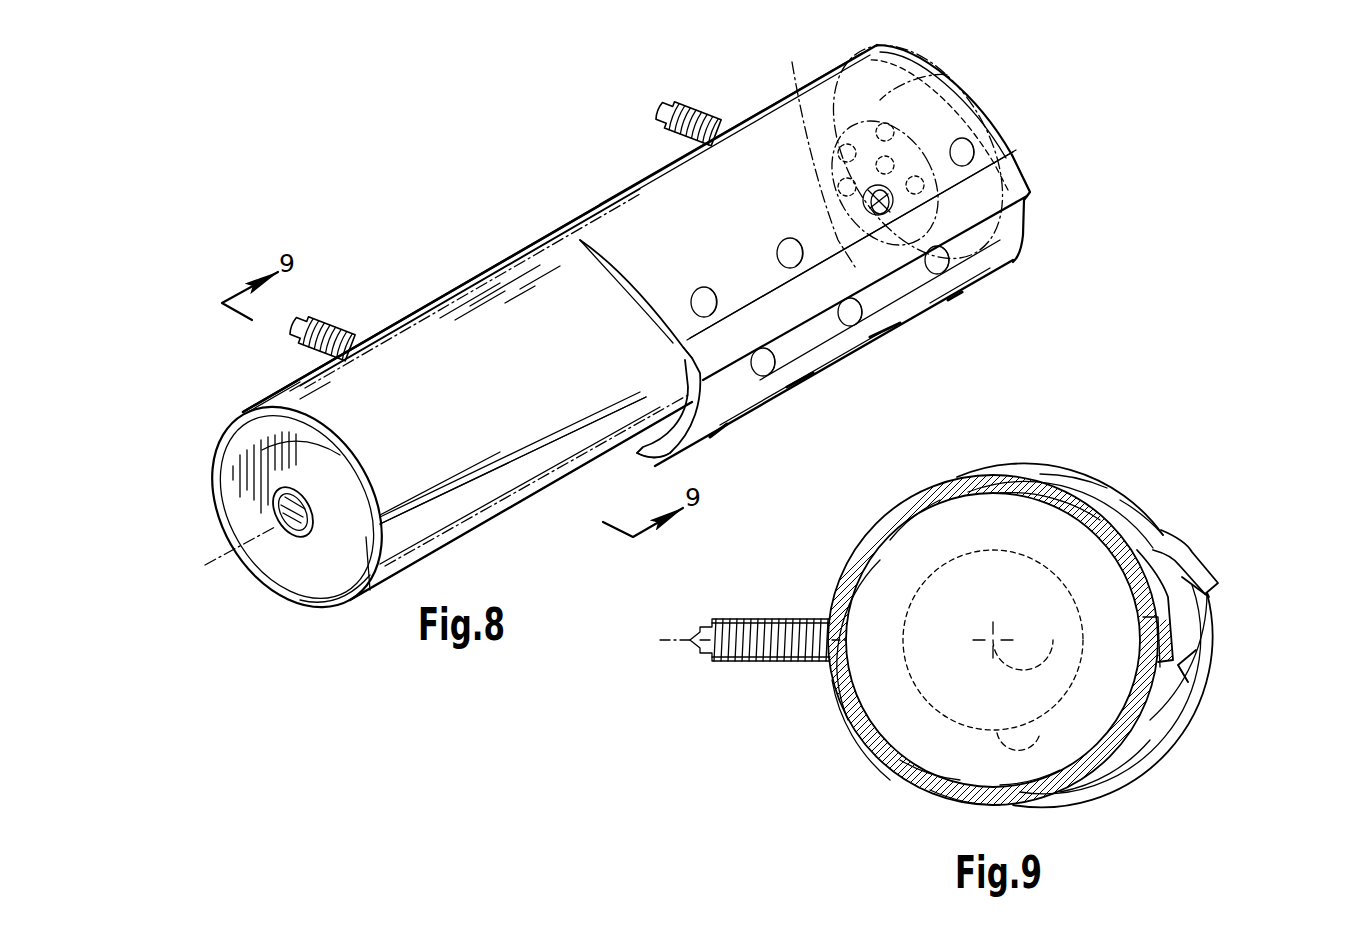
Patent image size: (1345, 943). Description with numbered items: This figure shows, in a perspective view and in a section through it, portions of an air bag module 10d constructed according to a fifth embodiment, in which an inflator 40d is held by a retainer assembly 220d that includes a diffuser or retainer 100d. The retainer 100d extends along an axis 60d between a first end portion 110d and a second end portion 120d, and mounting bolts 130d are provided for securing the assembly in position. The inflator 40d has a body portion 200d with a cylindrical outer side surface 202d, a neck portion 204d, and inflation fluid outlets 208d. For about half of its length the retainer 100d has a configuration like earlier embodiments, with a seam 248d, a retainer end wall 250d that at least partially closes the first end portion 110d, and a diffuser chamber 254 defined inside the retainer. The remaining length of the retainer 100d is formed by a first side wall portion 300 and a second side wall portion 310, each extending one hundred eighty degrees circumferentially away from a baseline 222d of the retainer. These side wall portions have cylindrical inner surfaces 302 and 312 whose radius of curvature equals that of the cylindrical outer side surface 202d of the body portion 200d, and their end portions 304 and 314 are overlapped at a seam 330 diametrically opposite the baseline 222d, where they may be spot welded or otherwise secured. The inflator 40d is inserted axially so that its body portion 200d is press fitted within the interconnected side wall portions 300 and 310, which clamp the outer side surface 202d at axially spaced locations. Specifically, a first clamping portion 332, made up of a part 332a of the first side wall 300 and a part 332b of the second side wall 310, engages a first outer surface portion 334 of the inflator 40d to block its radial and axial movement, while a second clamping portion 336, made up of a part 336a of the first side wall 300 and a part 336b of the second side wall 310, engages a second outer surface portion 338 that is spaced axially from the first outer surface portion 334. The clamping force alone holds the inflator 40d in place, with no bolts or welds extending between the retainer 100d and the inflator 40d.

In FIG. 8, the air bag module 10d is at (477, 147).
In FIG. 9, the air bag module 10d is at (1238, 430).
In FIG. 8, the inflator 40d is at (308, 577).
In FIG. 9, the inflator 40d is at (1013, 773).
In FIG. 8, the axis 60d is at (222, 553).
In FIG. 9, the axis 60d is at (1030, 640).
In FIG. 8, the retainer 100d is at (508, 257).
In FIG. 9, the retainer 100d is at (1064, 470).
In FIG. 8, the first end portion 110d is at (1035, 221).
In FIG. 8, the second end portion 120d is at (280, 382).
In FIG. 8, the mounting bolts 130d is at (337, 330).
In FIG. 9, the mounting bolts 130d is at (703, 657).
In FIG. 8, the body portion 200d is at (607, 210).
In FIG. 9, the body portion 200d is at (880, 615).
In FIG. 8, the cylindrical outer side surface 202d is at (630, 172).
In FIG. 9, the cylindrical outer side surface 202d is at (878, 740).
In FIG. 8, the neck portion 204d is at (812, 153).
In FIG. 9, the neck portion 204d is at (1045, 737).
In FIG. 8, the inflation fluid outlets 208d is at (947, 75).
In FIG. 8, the retainer assembly 220d is at (463, 278).
In FIG. 9, the retainer assembly 220d is at (1107, 480).
In FIG. 9, the baseline 222d is at (853, 697).
In FIG. 8, the seam 248d is at (890, 270).
In FIG. 9, the seam 248d is at (1212, 598).
In FIG. 8, the retainer end wall 250d is at (993, 115).
In FIG. 9, the diffuser chamber 254 is at (1150, 550).
In FIG. 8, the first side wall portion 300 is at (439, 470).
In FIG. 9, the first side wall portion 300 is at (1097, 635).
In FIG. 9, the cylindrical inner surface 302 is at (910, 517).
In FIG. 9, the end portion 304 is at (1170, 638).
In FIG. 8, the second side wall portion 310 is at (333, 617).
In FIG. 9, the second side wall portion 310 is at (943, 800).
In FIG. 9, the cylindrical inner surface 312 is at (910, 755).
In FIG. 9, the end portion 314 is at (1157, 663).
In FIG. 9, the seam 330 is at (1165, 667).
In FIG. 8, the first clamping portion 332 is at (370, 460).
In FIG. 9, the first clamping portion 332 is at (953, 477).
In FIG. 8, the part of first side wall 332a is at (397, 470).
In FIG. 9, the part of first side wall 332a is at (1080, 547).
In FIG. 8, the part of second side wall 332b is at (390, 597).
In FIG. 9, the part of second side wall 332b is at (1123, 740).
In FIG. 8, the first outer surface portion 334 is at (507, 517).
In FIG. 9, the first outer surface portion 334 is at (1147, 563).
In FIG. 8, the second clamping portion 336 is at (597, 294).
In FIG. 8, the part of first side wall 336a is at (640, 357).
In FIG. 8, the part of second side wall 336b is at (637, 447).
In FIG. 8, the second outer surface portion 338 is at (618, 375).